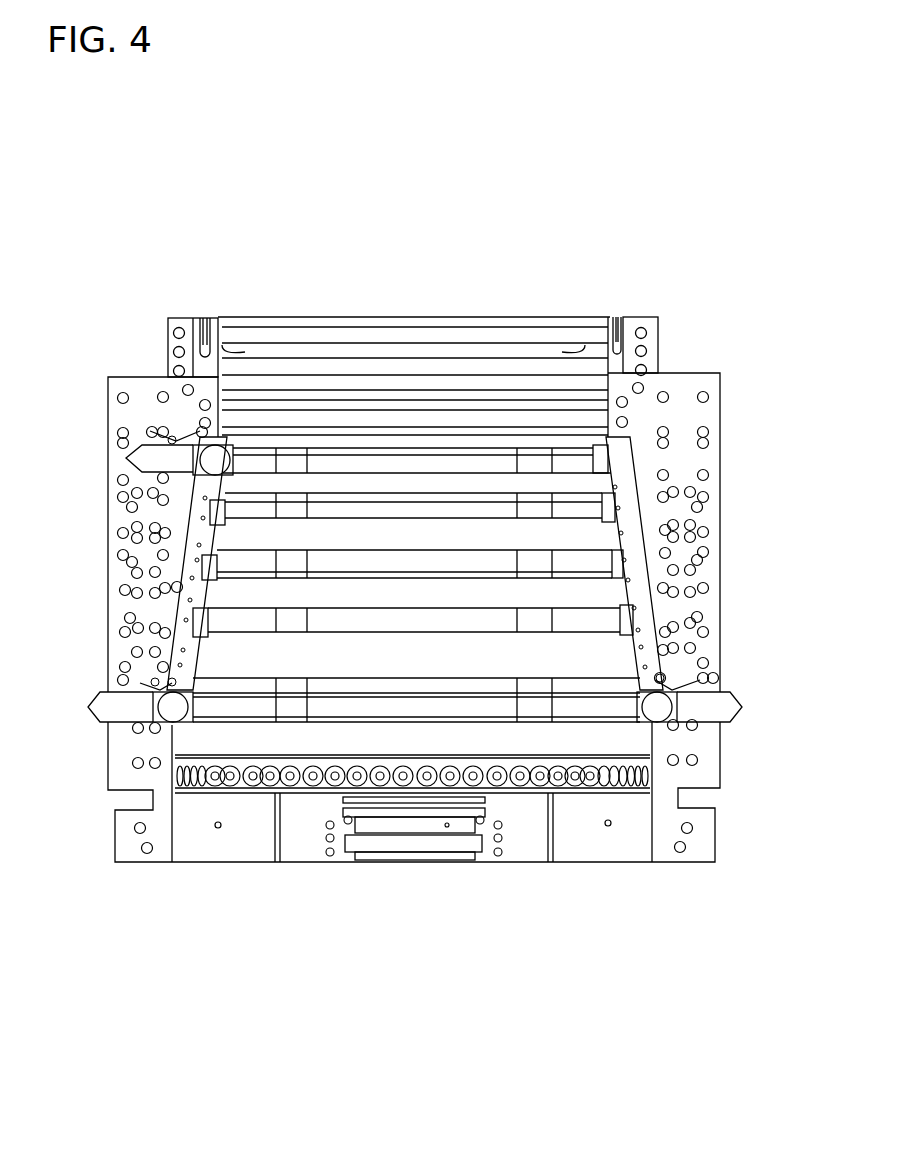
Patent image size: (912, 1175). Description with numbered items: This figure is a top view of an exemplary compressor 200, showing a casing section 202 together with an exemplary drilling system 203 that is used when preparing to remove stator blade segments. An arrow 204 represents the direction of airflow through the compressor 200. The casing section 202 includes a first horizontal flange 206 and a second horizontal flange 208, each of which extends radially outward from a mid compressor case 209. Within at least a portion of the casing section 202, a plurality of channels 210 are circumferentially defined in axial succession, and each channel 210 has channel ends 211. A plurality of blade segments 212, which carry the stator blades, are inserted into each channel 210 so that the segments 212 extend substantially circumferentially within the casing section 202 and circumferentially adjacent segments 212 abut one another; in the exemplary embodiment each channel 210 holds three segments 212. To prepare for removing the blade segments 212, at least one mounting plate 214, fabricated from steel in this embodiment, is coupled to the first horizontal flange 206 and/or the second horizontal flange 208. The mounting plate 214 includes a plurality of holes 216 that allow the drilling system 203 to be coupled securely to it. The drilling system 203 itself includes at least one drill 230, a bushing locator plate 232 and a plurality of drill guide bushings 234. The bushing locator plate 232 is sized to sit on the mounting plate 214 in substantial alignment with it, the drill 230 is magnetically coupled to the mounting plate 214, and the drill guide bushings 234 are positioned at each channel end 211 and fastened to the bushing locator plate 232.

The compressor 200 is at (657, 186).
The casing section 202 is at (90, 856).
The drilling system 203 is at (86, 331).
The arrow 204 is at (412, 884).
The first horizontal flange 206 is at (186, 318).
The second horizontal flange 208 is at (641, 317).
The mid compressor case 209 is at (208, 310).
The channel 210 is at (468, 515).
The channel end 211 is at (232, 388).
The blade segment 212 is at (258, 693).
The mounting plate 214 is at (108, 414).
The holes 216 is at (107, 528).
The drill 230 is at (125, 462).
The bushing locator plate 232 is at (200, 622).
The drill guide bushing 234 is at (213, 568).